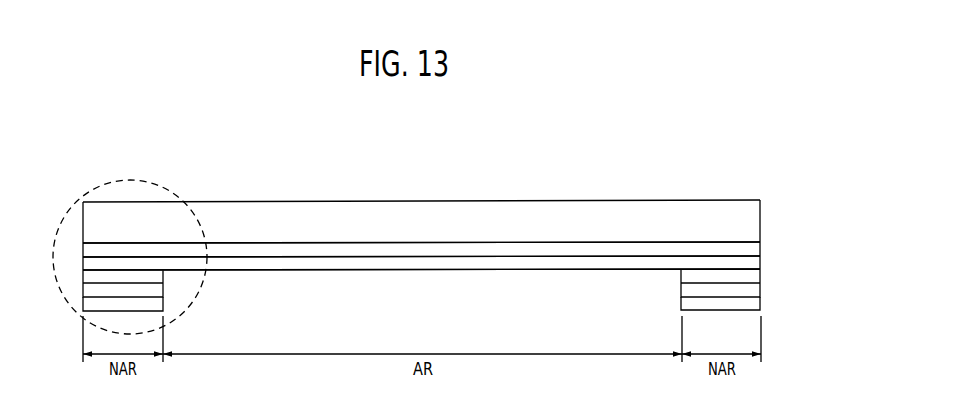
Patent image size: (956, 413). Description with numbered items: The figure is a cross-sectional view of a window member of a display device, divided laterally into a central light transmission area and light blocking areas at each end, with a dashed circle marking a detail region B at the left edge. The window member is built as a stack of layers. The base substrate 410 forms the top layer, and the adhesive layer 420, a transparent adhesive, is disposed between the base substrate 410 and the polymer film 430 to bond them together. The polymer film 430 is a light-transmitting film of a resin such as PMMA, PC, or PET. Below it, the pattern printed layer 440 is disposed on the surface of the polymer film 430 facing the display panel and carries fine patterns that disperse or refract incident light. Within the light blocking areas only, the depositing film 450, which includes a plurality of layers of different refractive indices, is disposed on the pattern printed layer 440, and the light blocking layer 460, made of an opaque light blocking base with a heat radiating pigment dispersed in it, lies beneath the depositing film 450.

The base substrate 410 is at (755, 211).
The adhesive layer 420 is at (755, 248).
The polymer film 430 is at (755, 261).
The pattern printed layer 440 is at (755, 277).
The depositing film 450 is at (688, 288).
The light blocking layer 460 is at (688, 302).
The detail region B is at (130, 180).